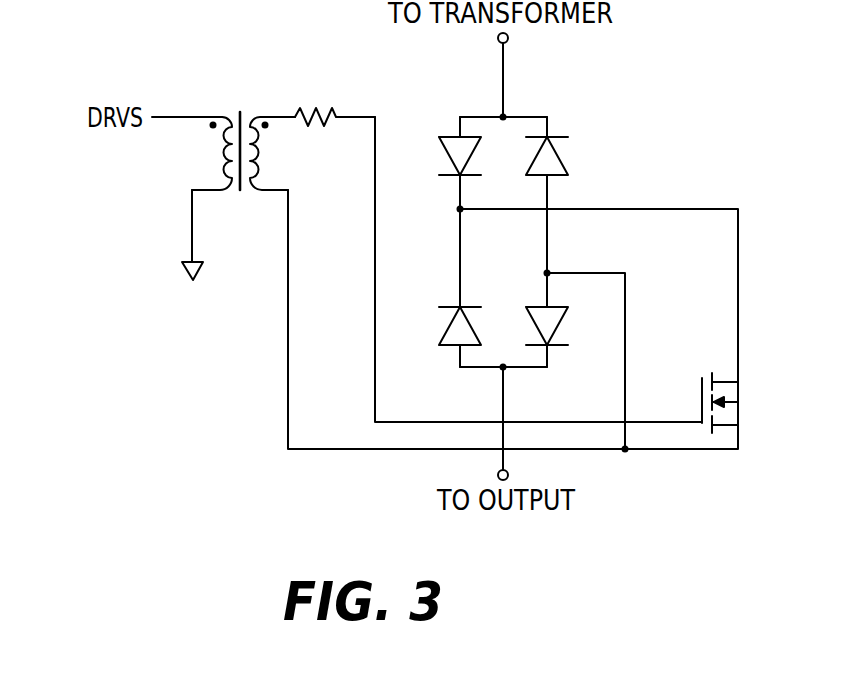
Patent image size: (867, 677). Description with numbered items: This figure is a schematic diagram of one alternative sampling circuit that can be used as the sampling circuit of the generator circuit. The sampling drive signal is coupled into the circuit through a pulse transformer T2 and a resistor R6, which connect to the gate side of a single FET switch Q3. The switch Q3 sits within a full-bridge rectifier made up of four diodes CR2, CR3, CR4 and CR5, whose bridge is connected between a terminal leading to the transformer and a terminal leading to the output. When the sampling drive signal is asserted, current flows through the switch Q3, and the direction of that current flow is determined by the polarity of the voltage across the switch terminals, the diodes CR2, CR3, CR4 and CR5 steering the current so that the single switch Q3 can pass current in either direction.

The pulse transformer T2 is at (243, 136).
The resistor R6 is at (335, 98).
The diode CR5 is at (439, 212).
The diode CR2 is at (574, 212).
The diode CR4 is at (462, 355).
The diode CR3 is at (549, 355).
The FET switch Q3 is at (739, 403).